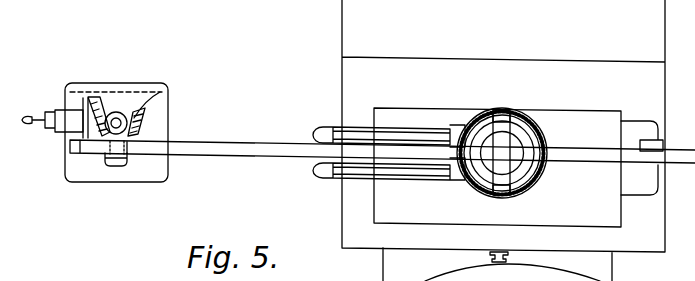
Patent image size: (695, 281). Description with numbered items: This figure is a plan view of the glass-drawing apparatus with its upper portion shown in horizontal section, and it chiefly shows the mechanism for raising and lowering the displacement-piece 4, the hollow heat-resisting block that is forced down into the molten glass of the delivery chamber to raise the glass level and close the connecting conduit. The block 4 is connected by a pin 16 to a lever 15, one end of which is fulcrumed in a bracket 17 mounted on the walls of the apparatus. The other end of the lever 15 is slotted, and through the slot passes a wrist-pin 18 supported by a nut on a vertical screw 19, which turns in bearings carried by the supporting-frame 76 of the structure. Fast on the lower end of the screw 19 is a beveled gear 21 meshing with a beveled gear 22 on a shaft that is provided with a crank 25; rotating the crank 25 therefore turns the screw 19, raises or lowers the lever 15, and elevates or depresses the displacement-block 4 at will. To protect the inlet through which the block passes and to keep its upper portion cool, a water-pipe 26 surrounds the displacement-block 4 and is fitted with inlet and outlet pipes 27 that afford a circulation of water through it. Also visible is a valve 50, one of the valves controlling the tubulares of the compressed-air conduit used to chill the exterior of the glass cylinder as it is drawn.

The displacement-piece 4 is at (523, 143).
The lever 15 is at (215, 146).
The pin 16 is at (500, 112).
The bracket 17 is at (642, 159).
The wrist-pin 18 is at (111, 167).
The vertical screw 19 is at (130, 120).
The beveled gear 21 is at (121, 123).
The beveled gear 22 is at (98, 115).
The crank 25 is at (36, 124).
The water-pipe 26 is at (521, 114).
The inlet and outlet pipes 27 is at (320, 113).
The valve 50 is at (489, 258).
The supporting-frame 76 is at (79, 166).